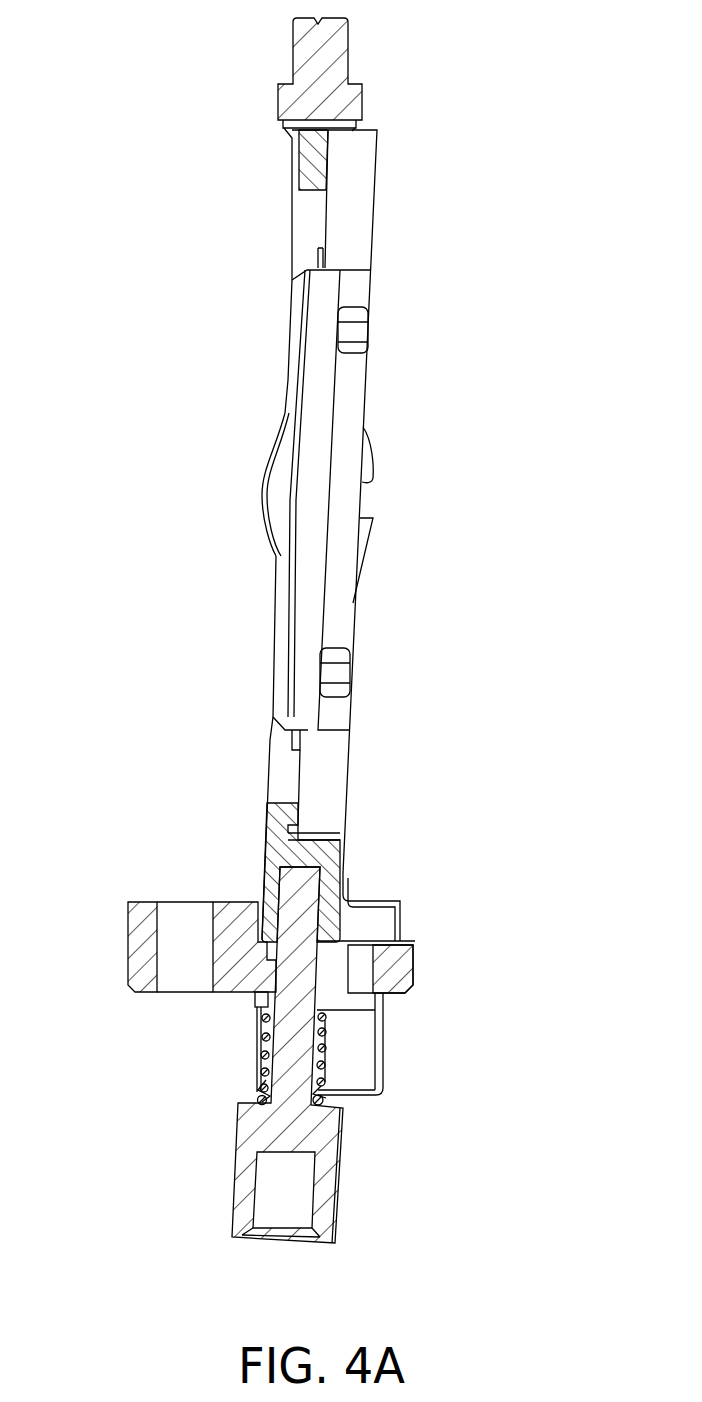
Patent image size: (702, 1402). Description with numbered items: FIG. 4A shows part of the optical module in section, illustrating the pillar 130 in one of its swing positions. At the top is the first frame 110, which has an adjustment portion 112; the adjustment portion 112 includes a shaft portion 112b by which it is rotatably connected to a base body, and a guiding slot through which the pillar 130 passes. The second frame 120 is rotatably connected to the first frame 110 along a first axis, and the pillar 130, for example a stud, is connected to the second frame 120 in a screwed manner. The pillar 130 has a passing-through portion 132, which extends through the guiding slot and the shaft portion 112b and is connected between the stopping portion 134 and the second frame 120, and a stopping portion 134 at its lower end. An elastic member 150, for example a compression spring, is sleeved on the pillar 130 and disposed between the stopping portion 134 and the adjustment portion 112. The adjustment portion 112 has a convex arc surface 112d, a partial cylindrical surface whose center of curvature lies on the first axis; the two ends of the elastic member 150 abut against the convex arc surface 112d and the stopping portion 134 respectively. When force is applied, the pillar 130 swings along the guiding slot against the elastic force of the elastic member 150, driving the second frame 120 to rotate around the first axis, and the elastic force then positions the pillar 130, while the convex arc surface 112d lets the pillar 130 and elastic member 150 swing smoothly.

The first frame 110 is at (290, 103).
The second frame 120 is at (270, 851).
The adjustment portion 112 is at (408, 965).
The convex arc surface 112d is at (350, 1027).
The shaft portion 112b is at (352, 1084).
The pillar 130 is at (357, 1270).
The passing-through portion 132 is at (283, 1003).
The stopping portion 134 is at (325, 1195).
The elastic member 150 is at (330, 1060).